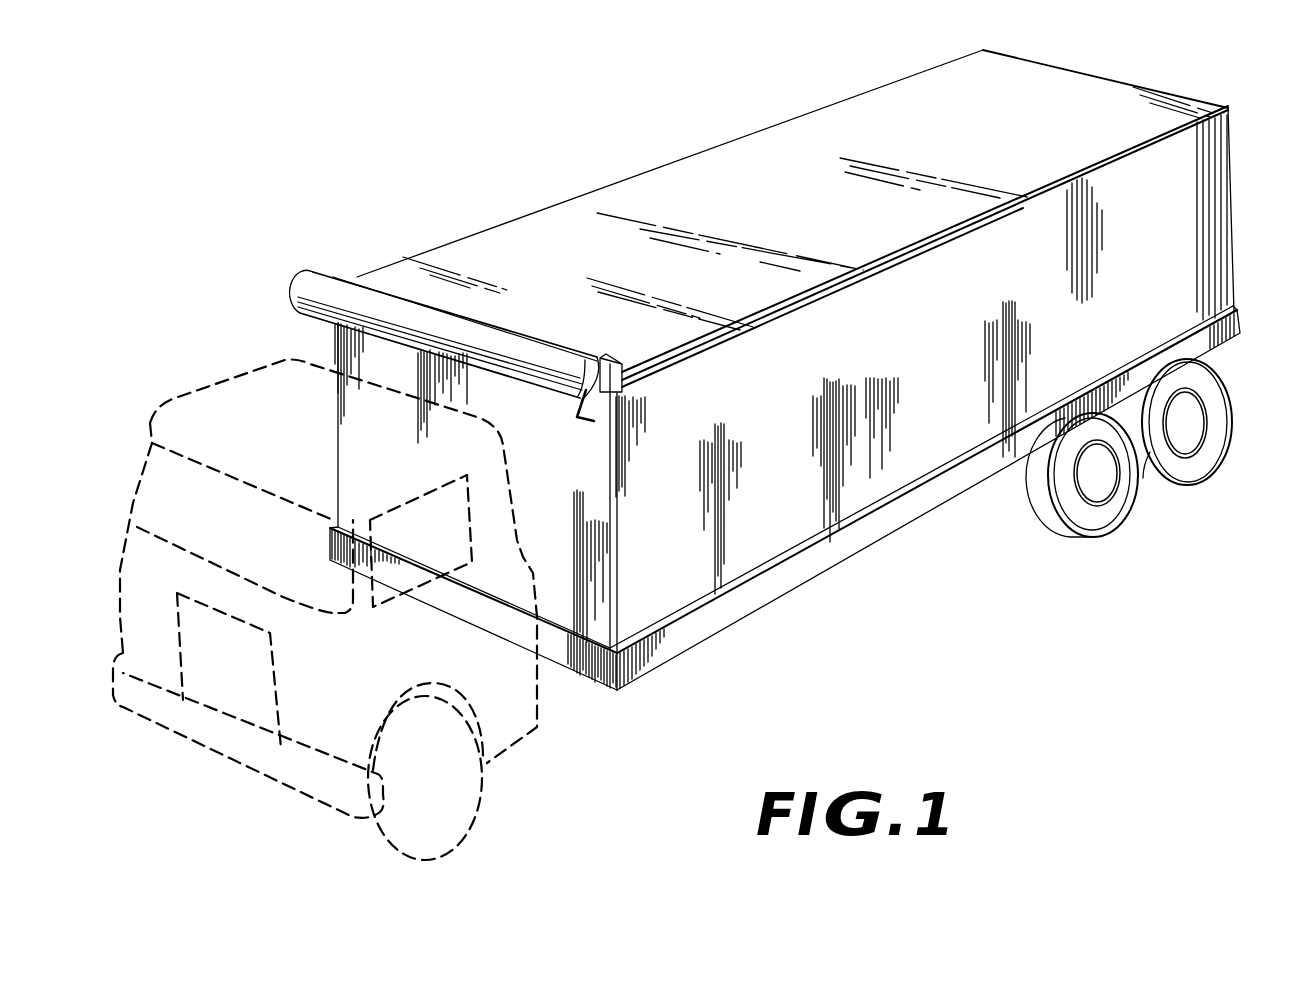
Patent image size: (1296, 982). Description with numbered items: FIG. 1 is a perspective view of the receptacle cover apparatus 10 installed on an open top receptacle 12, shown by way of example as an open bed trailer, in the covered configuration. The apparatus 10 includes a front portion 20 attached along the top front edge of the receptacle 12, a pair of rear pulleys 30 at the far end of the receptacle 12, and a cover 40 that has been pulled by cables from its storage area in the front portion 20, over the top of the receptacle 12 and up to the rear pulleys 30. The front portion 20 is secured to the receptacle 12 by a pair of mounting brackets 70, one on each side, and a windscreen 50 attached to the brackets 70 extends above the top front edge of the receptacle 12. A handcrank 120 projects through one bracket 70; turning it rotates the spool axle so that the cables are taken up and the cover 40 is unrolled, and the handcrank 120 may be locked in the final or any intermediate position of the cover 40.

The receptacle cover apparatus 10 is at (572, 114).
The open top receptacle 12 is at (775, 535).
The front portion 20 is at (315, 256).
The rear pulleys 30 is at (983, 50).
The cover 40 is at (764, 155).
The windscreen 50 is at (527, 353).
The mounting brackets 70 is at (621, 365).
The handcrank 120 is at (576, 425).